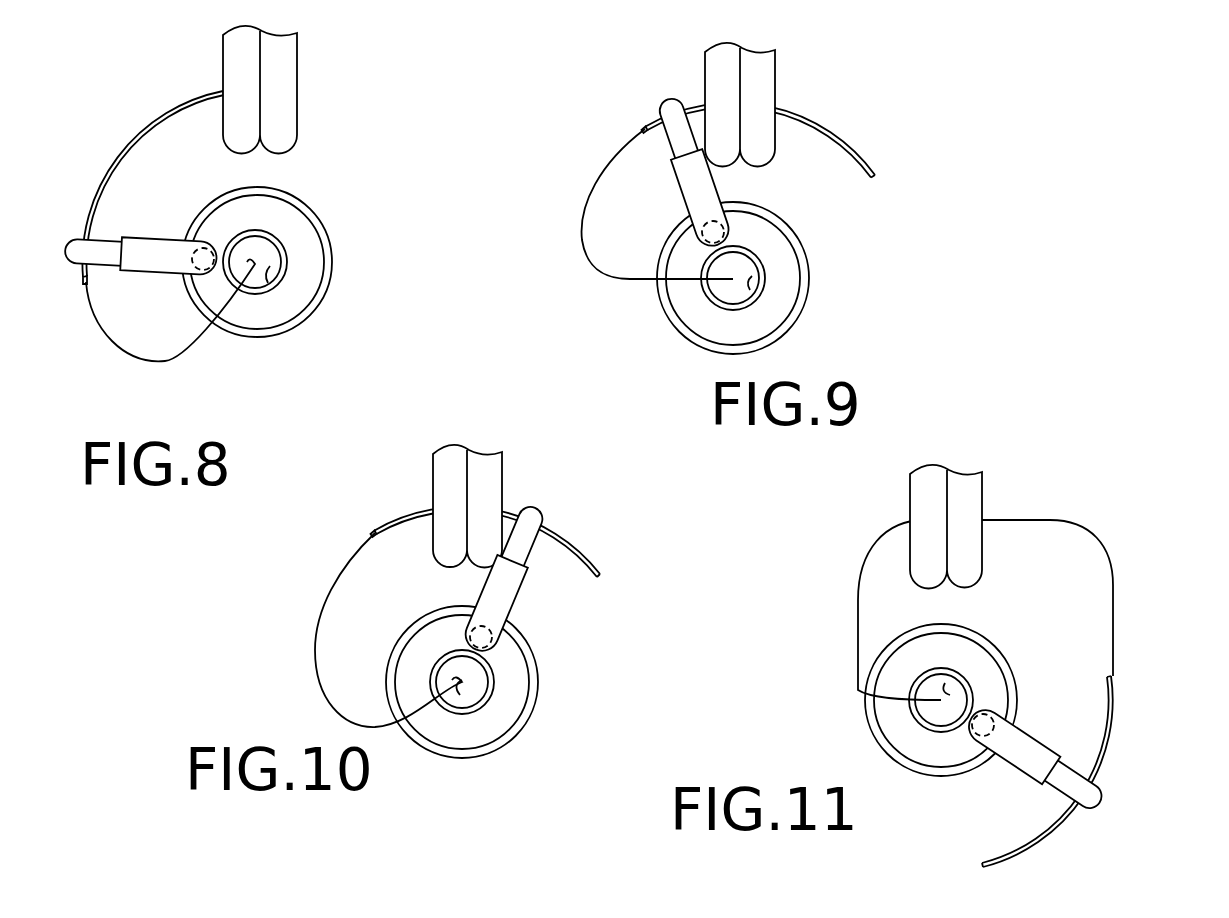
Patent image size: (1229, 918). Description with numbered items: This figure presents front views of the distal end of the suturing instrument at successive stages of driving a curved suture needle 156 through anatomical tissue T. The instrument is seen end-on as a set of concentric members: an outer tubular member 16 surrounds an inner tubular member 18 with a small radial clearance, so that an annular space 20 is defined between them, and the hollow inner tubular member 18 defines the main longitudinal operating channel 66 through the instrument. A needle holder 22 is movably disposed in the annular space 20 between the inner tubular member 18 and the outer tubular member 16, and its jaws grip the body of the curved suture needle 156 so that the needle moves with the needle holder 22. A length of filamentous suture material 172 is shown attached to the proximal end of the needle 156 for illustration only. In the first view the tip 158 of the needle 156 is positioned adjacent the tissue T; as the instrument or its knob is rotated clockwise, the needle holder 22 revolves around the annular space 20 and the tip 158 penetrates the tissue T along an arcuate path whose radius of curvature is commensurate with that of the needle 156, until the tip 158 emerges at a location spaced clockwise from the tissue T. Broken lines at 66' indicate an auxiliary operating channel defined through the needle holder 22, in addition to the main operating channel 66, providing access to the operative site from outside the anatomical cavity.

In FIG. 8, the outer tubular member 16 is at (208, 196).
In FIG. 9, the outer tubular member 16 is at (657, 263).
In FIG. 10, the outer tubular member 16 is at (382, 665).
In FIG. 11, the outer tubular member 16 is at (858, 713).
In FIG. 8, the inner tubular member 18 is at (265, 238).
In FIG. 9, the inner tubular member 18 is at (718, 305).
In FIG. 10, the inner tubular member 18 is at (492, 700).
In FIG. 11, the inner tubular member 18 is at (918, 727).
In FIG. 8, the annular space 20 is at (310, 262).
In FIG. 9, the annular space 20 is at (766, 241).
In FIG. 10, the annular space 20 is at (462, 682).
In FIG. 11, the annular space 20 is at (941, 700).
In FIG. 8, the needle holder 22 is at (70, 255).
In FIG. 9, the needle holder 22 is at (660, 100).
In FIG. 10, the needle holder 22 is at (548, 515).
In FIG. 11, the needle holder 22 is at (1108, 810).
In FIG. 8, the longitudinal operating channel 66 is at (304, 311).
In FIG. 9, the longitudinal operating channel 66 is at (801, 282).
In FIG. 10, the longitudinal operating channel 66 is at (431, 733).
In FIG. 11, the longitudinal operating channel 66 is at (975, 645).
In FIG. 8, the auxiliary operating channel 66' is at (171, 290).
In FIG. 9, the auxiliary operating channel 66' is at (674, 202).
In FIG. 10, the auxiliary operating channel 66' is at (529, 631).
In FIG. 11, the auxiliary operating channel 66' is at (1021, 691).
In FIG. 8, the curved suture needle 156 is at (106, 165).
In FIG. 9, the curved suture needle 156 is at (849, 140).
In FIG. 10, the curved suture needle 156 is at (586, 554).
In FIG. 11, the curved suture needle 156 is at (1115, 745).
In FIG. 8, the tip 158 is at (223, 91).
In FIG. 9, the tip 158 is at (875, 177).
In FIG. 10, the tip 158 is at (600, 574).
In FIG. 11, the tip 158 is at (980, 863).
In FIG. 8, the filamentous suture material 172 is at (170, 337).
In FIG. 9, the filamentous suture material 172 is at (585, 252).
In FIG. 10, the filamentous suture material 172 is at (318, 614).
In FIG. 11, the filamentous suture material 172 is at (858, 590).
In FIG. 8, the anatomical tissue T is at (297, 116).
In FIG. 9, the anatomical tissue T is at (705, 72).
In FIG. 10, the anatomical tissue T is at (433, 475).
In FIG. 11, the anatomical tissue T is at (982, 503).